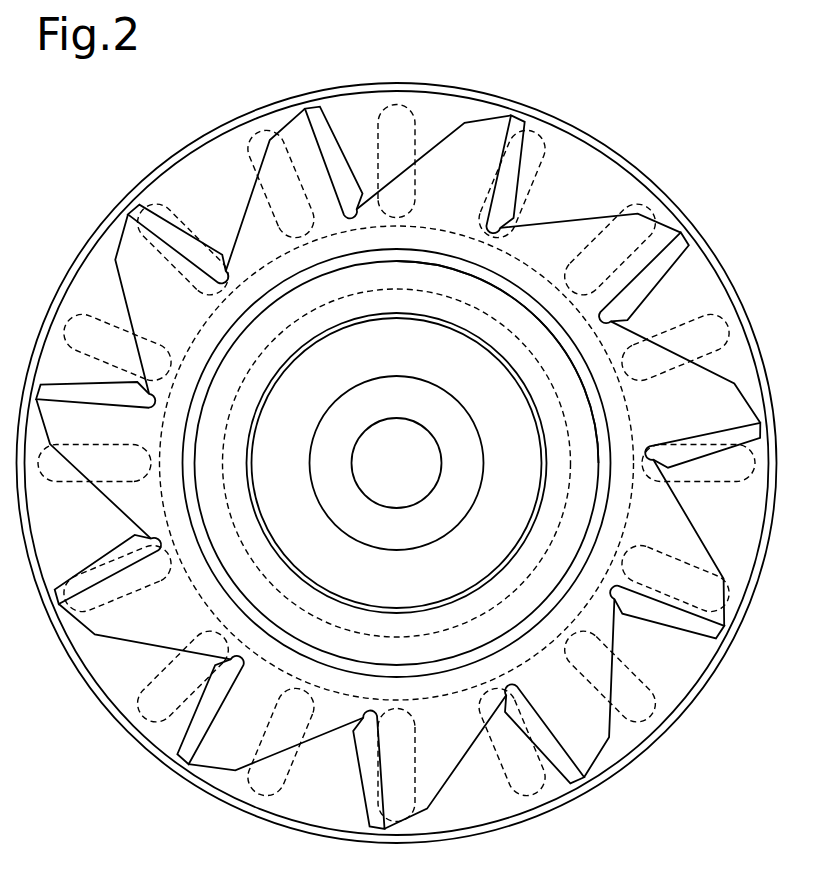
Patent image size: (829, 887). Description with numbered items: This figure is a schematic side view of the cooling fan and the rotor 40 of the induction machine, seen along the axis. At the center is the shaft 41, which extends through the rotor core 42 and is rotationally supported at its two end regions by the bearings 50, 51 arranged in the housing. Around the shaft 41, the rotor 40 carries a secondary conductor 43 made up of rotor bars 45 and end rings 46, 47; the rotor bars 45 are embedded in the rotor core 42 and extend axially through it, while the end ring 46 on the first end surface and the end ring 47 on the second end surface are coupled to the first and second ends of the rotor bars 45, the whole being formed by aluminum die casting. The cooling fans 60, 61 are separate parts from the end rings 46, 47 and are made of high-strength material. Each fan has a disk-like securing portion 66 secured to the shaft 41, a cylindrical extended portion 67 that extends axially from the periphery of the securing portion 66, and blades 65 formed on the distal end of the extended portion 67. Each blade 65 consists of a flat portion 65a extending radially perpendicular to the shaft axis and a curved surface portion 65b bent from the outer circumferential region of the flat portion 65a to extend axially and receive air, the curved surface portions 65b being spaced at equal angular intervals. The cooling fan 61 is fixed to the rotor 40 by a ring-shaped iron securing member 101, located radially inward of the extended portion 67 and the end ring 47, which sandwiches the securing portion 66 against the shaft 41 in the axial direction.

The rotor 40 is at (600, 95).
The shaft 41 is at (452, 390).
The rotor core 42 is at (617, 150).
The secondary conductor 43 is at (687, 164).
The rotor bars 45 is at (258, 178).
The end ring 46 is at (643, 530).
The end ring 47 is at (673, 206).
The bearing 50 is at (397, 463).
The bearing 51 is at (537, 420).
The cooling fan 60 is at (445, 137).
The cooling fan 61 is at (265, 190).
The blades 65 is at (503, 110).
The flat portion 65a is at (722, 545).
The curved surface portion 65b is at (660, 623).
The securing portion 66 is at (385, 249).
The extended portion 67 is at (412, 249).
The securing member 101 is at (593, 503).